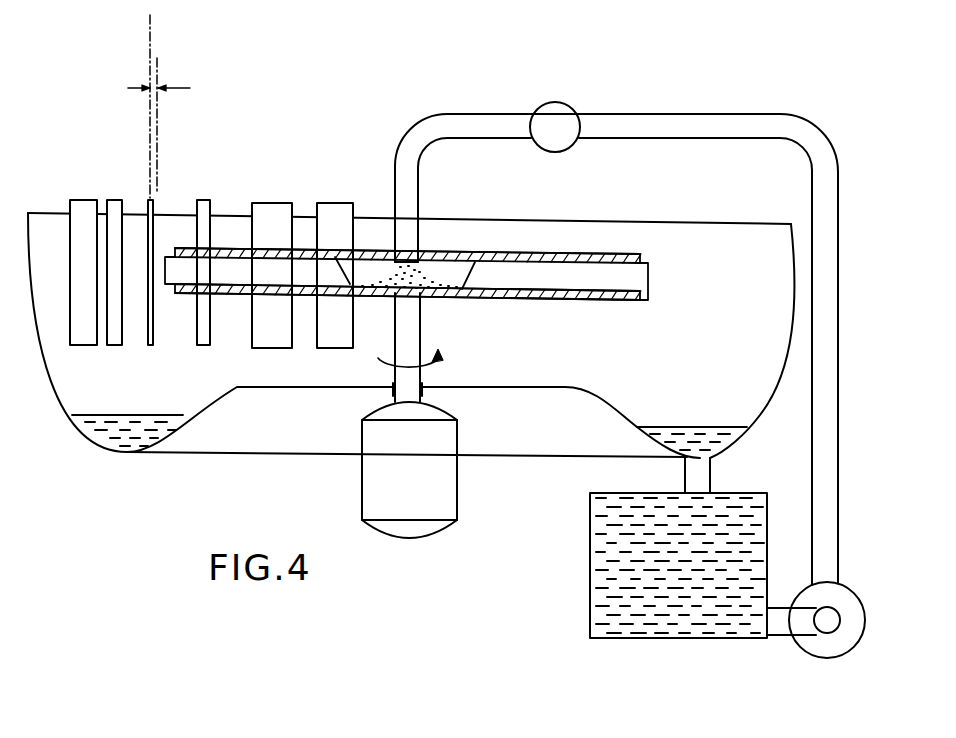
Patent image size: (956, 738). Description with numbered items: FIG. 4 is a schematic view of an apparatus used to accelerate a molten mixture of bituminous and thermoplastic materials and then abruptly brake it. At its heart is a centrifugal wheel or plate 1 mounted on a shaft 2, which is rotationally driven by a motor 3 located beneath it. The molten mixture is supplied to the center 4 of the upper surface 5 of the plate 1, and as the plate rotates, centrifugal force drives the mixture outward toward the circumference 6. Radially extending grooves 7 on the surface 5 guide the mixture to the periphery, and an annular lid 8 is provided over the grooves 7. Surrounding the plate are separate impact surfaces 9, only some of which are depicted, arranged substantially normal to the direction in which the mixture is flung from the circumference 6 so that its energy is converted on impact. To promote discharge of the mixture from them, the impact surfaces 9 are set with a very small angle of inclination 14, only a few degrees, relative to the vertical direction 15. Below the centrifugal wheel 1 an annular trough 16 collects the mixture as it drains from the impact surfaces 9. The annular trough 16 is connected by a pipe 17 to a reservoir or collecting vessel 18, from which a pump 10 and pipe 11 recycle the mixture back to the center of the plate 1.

The centrifugal wheel or plate 1 is at (514, 293).
The shaft 2 is at (420, 333).
The motor 3 is at (453, 504).
The center 4 is at (440, 296).
The upper surface 5 is at (636, 287).
The circumference 6 is at (650, 285).
The radially extending grooves 7 is at (586, 272).
The annular lid 8 is at (538, 248).
The impact surfaces 9 is at (90, 200).
The pump 10 is at (815, 648).
The pipe 11 is at (487, 120).
The angle of inclination 14 is at (160, 80).
The vertical direction 15 is at (153, 22).
The annular trough 16 is at (92, 407).
The pipe 17 is at (711, 476).
The reservoir or collecting vessel 18 is at (592, 564).